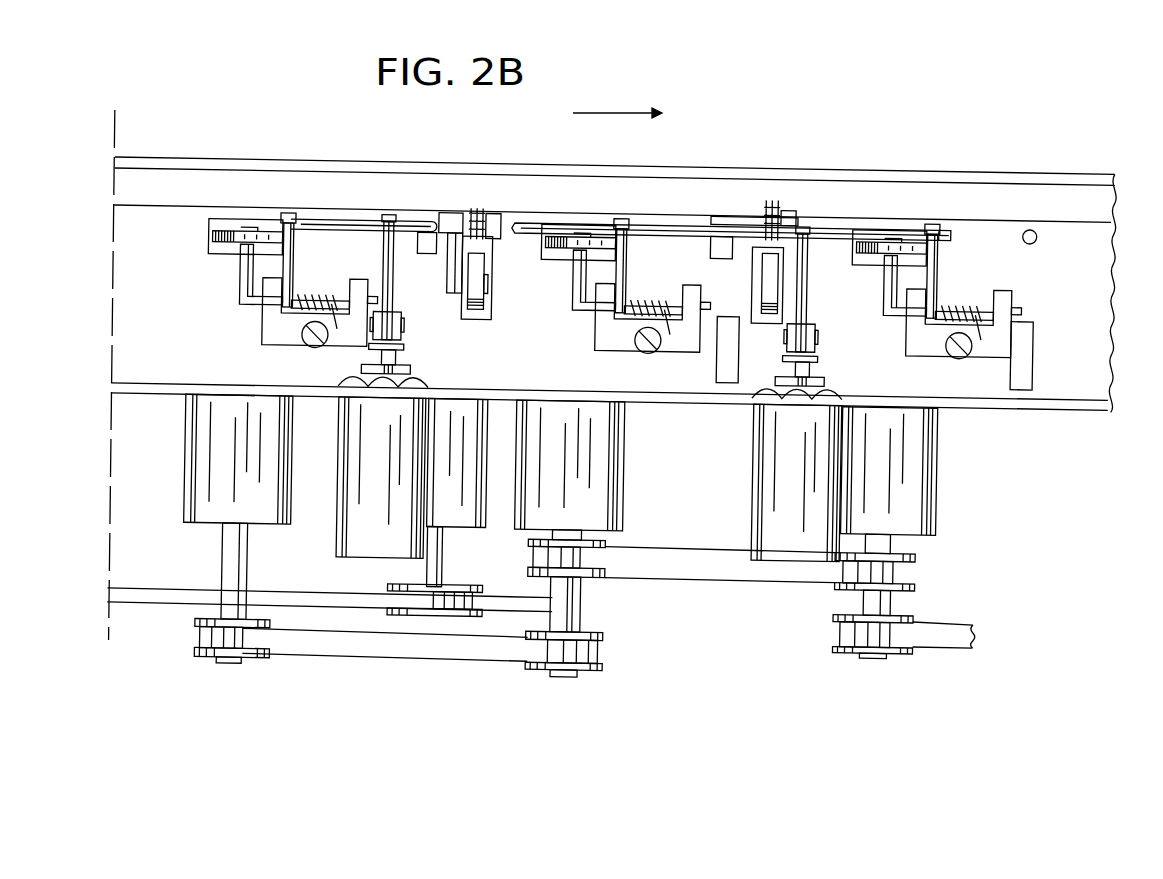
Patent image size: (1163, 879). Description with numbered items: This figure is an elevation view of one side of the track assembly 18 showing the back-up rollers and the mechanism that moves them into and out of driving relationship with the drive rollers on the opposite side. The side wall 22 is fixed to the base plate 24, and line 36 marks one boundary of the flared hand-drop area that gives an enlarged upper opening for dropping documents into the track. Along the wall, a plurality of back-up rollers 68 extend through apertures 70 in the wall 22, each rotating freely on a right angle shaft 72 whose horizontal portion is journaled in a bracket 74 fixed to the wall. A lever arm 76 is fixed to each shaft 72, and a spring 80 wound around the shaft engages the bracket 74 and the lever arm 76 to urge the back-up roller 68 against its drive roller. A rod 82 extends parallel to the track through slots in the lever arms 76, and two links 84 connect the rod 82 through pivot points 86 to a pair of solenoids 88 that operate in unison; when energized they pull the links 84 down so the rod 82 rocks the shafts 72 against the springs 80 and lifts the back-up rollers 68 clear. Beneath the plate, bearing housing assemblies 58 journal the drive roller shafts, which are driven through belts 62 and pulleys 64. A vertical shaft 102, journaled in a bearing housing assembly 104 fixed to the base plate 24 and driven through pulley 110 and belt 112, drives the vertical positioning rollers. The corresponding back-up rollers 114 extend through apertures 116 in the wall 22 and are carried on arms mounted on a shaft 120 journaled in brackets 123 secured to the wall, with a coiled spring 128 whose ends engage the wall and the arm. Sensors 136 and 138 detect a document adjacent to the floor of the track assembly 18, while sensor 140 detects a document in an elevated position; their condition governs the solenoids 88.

The track assembly 18 is at (762, 157).
The side wall 22 is at (272, 157).
The base plate 24 is at (1038, 413).
The line 36 is at (1104, 336).
The bearing housing assembly 58 is at (196, 459).
The belt 62 is at (425, 654).
The pulley 64 is at (207, 658).
The back-up roller 68 is at (212, 237).
The aperture 70 is at (225, 258).
The right angle shaft 72 is at (242, 286).
The bracket 74 is at (293, 339).
The lever arm 76 is at (292, 248).
The spring 80 is at (313, 305).
The rod 82 is at (348, 222).
The link 84 is at (387, 249).
The pivot point 86 is at (404, 321).
The solenoid 88 is at (349, 534).
The vertical shaft 102 is at (445, 571).
The bearing housing assembly 104 is at (462, 513).
The pulley 110 is at (480, 614).
The belt 112 is at (188, 591).
The back-up roller 114 is at (480, 316).
The aperture 116 is at (469, 323).
The shaft 120 is at (447, 218).
The bracket 123 is at (429, 248).
The spring 128 is at (480, 218).
The sensor 136 is at (718, 373).
The sensor 138 is at (1020, 374).
The sensor 140 is at (1038, 241).